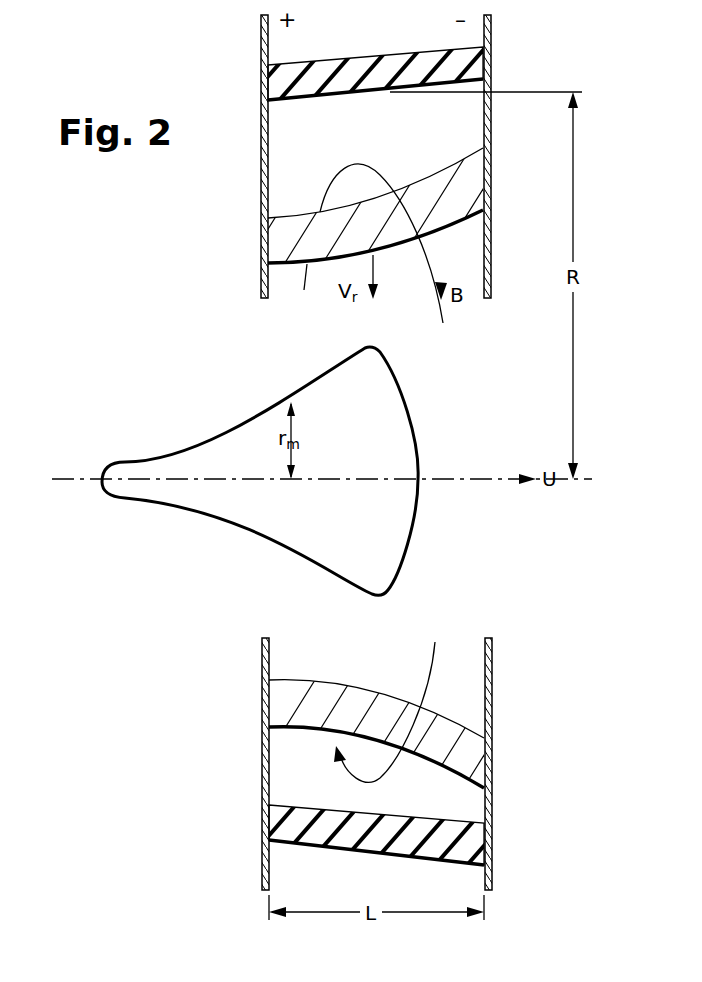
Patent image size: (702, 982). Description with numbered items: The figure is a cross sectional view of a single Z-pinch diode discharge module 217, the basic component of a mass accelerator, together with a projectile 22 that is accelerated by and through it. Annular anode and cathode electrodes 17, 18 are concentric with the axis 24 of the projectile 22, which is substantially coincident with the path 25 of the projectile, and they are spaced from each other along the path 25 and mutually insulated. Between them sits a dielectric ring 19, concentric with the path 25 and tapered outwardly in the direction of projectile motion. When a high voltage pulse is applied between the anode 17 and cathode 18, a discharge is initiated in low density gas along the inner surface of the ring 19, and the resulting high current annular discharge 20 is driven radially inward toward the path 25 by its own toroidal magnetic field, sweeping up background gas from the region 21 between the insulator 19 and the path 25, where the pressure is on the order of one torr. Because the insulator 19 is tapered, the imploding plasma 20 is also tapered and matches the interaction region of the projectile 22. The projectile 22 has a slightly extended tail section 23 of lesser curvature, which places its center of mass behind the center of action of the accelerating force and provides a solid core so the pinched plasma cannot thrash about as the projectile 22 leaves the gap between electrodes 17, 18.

The anode electrode 17 is at (250, 448).
The cathode electrode 18 is at (502, 448).
The module 217 is at (374, 19).
The dielectric ring 19 is at (337, 94).
The annular discharge 20 is at (473, 183).
The region 21 is at (398, 715).
The projectile 22 is at (375, 453).
The tail section 23 is at (152, 486).
The axis 24 is at (79, 477).
The path 25 is at (500, 480).